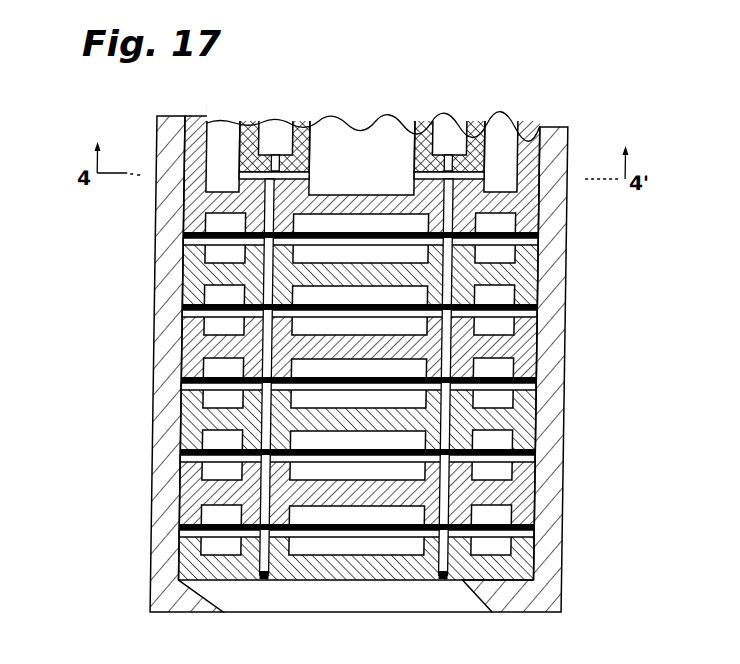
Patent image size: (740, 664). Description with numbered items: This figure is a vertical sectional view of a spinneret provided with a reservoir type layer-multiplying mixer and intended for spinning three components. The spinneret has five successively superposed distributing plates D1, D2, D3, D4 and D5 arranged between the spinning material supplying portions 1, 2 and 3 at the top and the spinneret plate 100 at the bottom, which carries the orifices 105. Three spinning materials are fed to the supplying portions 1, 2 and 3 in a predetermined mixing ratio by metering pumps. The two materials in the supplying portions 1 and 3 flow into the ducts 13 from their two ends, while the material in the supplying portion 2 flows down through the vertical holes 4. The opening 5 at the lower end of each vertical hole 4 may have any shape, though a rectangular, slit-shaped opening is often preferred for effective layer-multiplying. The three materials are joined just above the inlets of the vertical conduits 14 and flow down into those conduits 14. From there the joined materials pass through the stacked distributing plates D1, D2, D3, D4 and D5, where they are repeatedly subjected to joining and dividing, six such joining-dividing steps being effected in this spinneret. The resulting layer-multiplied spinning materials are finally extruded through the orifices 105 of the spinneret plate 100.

The spinning material supplying portion 1 is at (228, 121).
The spinning material supplying portion 2 is at (272, 121).
The spinning material supplying portion 3 is at (355, 147).
The vertical hole 4 is at (290, 121).
The opening 5 is at (305, 120).
The duct 13 is at (421, 123).
The vertical conduit 14 is at (187, 215).
The distributing plate D1 is at (187, 188).
The distributing plate D2 is at (188, 267).
The distributing plate D3 is at (188, 340).
The distributing plate D4 is at (190, 405).
The distributing plate D5 is at (190, 482).
The spinneret plate 100 is at (183, 558).
The orifice 105 is at (268, 582).